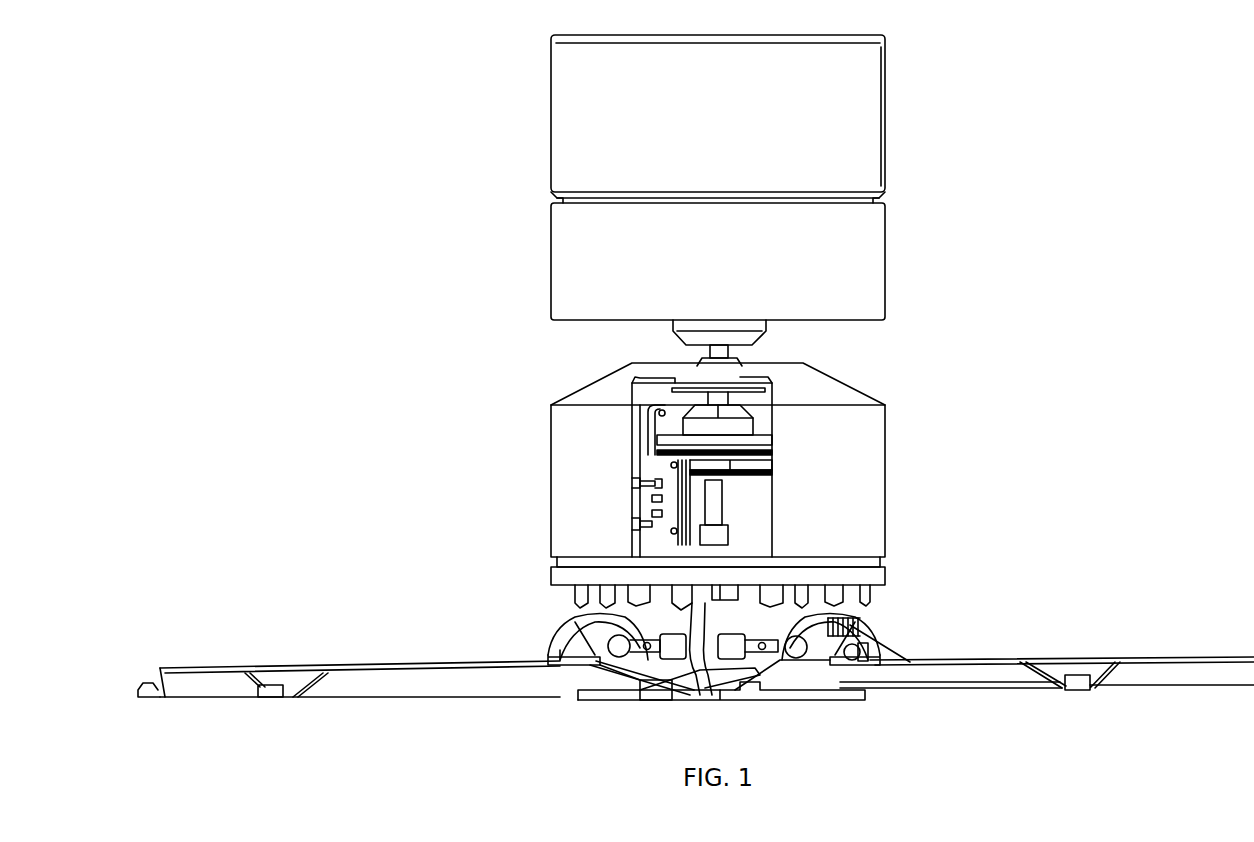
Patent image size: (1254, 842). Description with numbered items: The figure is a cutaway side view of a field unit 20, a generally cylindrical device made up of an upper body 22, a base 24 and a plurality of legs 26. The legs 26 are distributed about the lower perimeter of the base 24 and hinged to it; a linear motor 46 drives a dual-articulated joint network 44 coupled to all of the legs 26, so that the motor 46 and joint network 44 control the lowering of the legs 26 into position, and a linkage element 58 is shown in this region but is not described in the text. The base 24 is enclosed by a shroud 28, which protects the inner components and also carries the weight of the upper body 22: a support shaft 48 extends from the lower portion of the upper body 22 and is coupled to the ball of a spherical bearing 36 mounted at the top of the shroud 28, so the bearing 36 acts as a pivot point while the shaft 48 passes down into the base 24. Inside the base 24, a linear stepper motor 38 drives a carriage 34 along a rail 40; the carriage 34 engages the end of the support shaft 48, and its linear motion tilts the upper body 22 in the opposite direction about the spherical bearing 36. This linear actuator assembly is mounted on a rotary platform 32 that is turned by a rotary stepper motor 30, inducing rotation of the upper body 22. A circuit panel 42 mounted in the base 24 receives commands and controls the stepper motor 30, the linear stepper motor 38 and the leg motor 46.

The field unit 20 is at (1004, 148).
The upper body 22 is at (810, 144).
The base 24 is at (900, 486).
The legs 26 is at (1040, 663).
The shroud 28 is at (884, 540).
The rotary stepper motor 30 is at (765, 500).
The rotary platform 32 is at (766, 462).
The carriage 34 is at (752, 432).
The spherical bearing 36 is at (738, 356).
The linear stepper motor 38 is at (640, 432).
The rail 40 is at (655, 446).
The circuit panel 42 is at (640, 500).
The dual-articulated joint network 44 is at (784, 680).
The linear motor 46 is at (863, 622).
The support shaft 48 is at (700, 349).
The linkage arm 58 is at (705, 660).